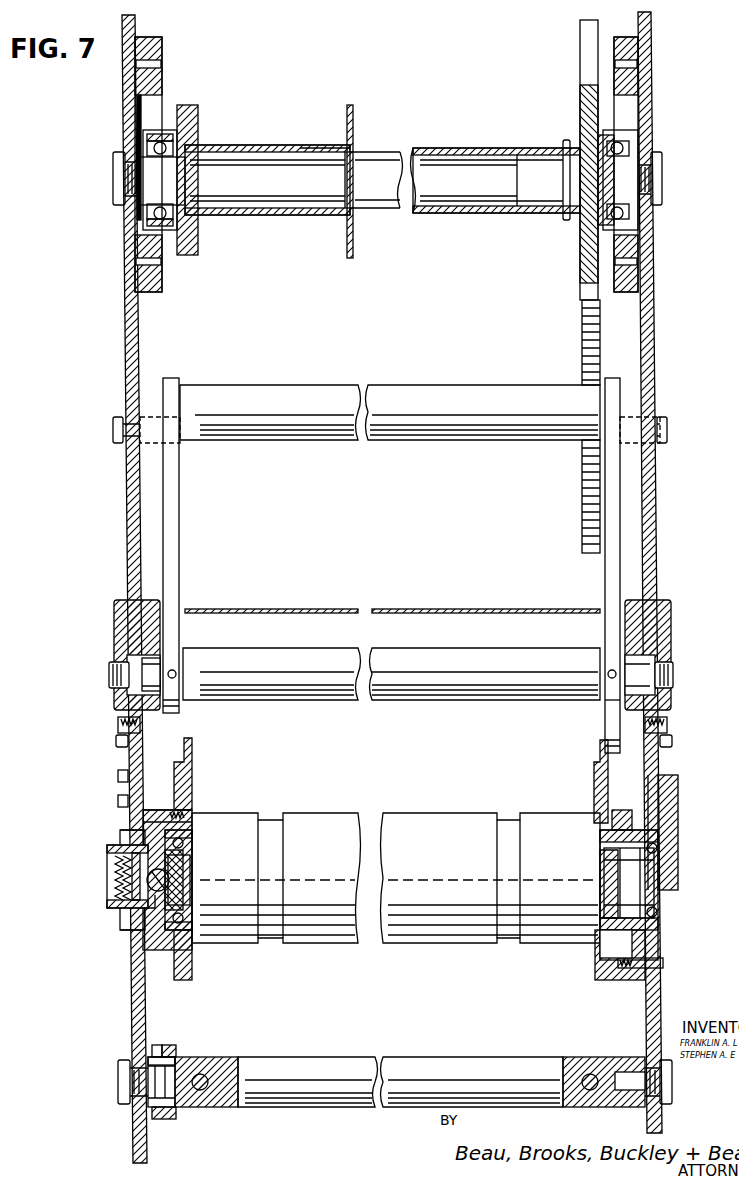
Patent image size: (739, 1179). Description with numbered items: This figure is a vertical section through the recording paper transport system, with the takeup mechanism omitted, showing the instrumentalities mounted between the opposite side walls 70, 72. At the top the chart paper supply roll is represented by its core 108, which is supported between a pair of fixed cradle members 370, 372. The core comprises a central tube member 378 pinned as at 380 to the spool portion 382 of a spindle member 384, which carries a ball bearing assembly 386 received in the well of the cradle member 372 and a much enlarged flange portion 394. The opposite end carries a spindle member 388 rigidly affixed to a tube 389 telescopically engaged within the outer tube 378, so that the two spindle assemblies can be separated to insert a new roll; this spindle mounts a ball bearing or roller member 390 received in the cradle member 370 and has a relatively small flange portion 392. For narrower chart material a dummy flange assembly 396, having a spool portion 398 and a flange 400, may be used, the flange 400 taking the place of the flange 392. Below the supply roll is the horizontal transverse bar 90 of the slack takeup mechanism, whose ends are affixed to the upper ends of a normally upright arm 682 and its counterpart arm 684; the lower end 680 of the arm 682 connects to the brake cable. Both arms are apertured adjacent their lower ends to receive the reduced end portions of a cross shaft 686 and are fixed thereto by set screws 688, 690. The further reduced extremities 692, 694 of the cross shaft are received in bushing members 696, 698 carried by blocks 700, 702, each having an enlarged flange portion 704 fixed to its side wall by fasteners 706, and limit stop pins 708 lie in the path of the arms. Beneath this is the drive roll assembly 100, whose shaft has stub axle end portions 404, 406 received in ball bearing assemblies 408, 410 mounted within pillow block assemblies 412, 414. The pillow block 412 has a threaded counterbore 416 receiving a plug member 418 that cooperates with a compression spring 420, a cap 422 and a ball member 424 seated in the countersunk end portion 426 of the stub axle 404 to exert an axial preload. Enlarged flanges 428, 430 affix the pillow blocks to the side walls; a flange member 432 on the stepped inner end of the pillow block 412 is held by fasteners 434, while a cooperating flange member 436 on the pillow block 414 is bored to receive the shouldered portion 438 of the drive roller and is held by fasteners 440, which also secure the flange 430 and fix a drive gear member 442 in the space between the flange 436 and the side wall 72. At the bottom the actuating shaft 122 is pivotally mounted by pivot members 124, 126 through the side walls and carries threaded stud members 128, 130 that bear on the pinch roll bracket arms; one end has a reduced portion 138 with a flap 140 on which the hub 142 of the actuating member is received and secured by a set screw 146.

The side wall portion 70 is at (133, 372).
The side wall portion 72 is at (652, 378).
The horizontal transverse bar 90 is at (312, 385).
The drive roll assembly 100 is at (452, 806).
The core of the supply roll 108 is at (449, 137).
The actuating shaft 122 is at (432, 1055).
The pivot member 124 is at (118, 1082).
The pivot member 126 is at (652, 1100).
The threaded stud member 128 is at (238, 1075).
The threaded stud member 130 is at (597, 1062).
The reduced portion 138 is at (162, 1119).
The flap 140 is at (155, 1045).
The hub 142 is at (180, 1058).
The set screw 146 is at (170, 1046).
The cradle member 370 is at (165, 78).
The cradle member 372 is at (625, 37).
The central tube member 378 is at (405, 135).
The pin 380 is at (566, 140).
The spool portion 382 is at (530, 200).
The spindle member 384 is at (626, 170).
The ball bearing assembly 386 is at (624, 133).
The spindle member 388 is at (125, 160).
The tube 389 is at (258, 158).
The ball bearing or roller member 390 is at (155, 130).
The flange portion 392 is at (198, 118).
The enlarged flange portion 394 is at (580, 52).
The dummy flange assembly 396 is at (330, 140).
The spool portion 398 is at (298, 140).
The flange 400 is at (354, 128).
The stub axle end portion 404 is at (185, 870).
The stub axle end portion 406 is at (658, 868).
The ball bearing assembly 408 is at (199, 826).
The ball bearing assembly 410 is at (665, 838).
The pillow block assembly 412 is at (112, 839).
The pillow block assembly 414 is at (682, 800).
The threaded counterbore 416 is at (107, 856).
The plug member 418 is at (112, 874).
The compression spring 420 is at (140, 900).
The cap 422 is at (138, 905).
The ball member 424 is at (170, 882).
The countersunk end portion 426 is at (185, 872).
The enlarged flange 428 is at (118, 776).
The enlarged flange 430 is at (678, 780).
The flange member 432 is at (192, 772).
The fasteners 434 is at (118, 801).
The flange member 436 is at (587, 778).
The shouldered portion 438 is at (600, 880).
The fasteners 440 is at (618, 810).
The drive gear member 442 is at (600, 945).
The lower end of arm 680 is at (605, 724).
The upright arm 682 is at (620, 562).
The arm 684 is at (180, 562).
The cross shaft 686 is at (440, 660).
The set screw 688 is at (178, 672).
The set screw 690 is at (608, 670).
The reduced extremity 692 is at (160, 670).
The reduced extremity 694 is at (668, 668).
The bushing member 696 is at (150, 652).
The bushing member 698 is at (620, 640).
The block 700 is at (114, 640).
The block 702 is at (668, 640).
The enlarged flange portion 704 is at (116, 742).
The fasteners 706 is at (118, 725).
The limit stop pins 708 is at (162, 422).